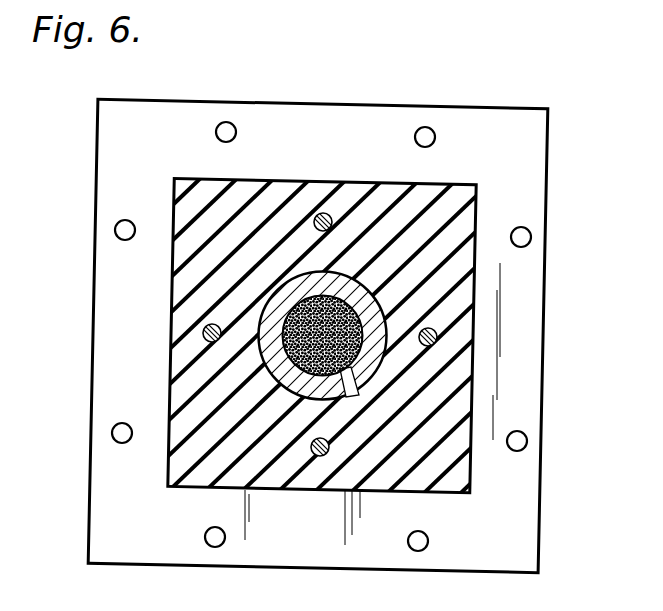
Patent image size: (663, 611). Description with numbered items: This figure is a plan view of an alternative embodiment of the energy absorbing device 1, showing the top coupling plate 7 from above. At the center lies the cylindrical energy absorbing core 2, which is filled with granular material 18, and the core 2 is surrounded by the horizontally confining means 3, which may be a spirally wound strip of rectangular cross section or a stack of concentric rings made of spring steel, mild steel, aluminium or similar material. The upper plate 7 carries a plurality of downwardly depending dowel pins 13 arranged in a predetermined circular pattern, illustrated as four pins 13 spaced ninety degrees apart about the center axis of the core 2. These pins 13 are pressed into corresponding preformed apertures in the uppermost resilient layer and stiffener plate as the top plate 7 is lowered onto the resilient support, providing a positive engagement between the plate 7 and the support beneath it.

The wall element / panel assembly 1 is at (557, 111).
The central energy absorbing core 2 is at (290, 357).
The horizontally confining means 3 is at (290, 300).
The top coupling plate 7 is at (103, 163).
The dowel pins 13 is at (325, 213).
The granular material 18 is at (350, 278).